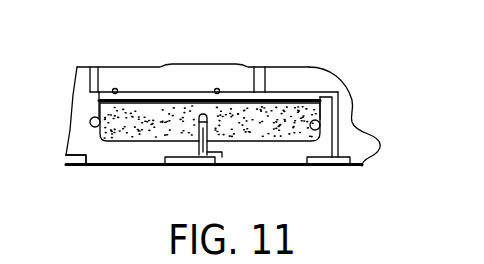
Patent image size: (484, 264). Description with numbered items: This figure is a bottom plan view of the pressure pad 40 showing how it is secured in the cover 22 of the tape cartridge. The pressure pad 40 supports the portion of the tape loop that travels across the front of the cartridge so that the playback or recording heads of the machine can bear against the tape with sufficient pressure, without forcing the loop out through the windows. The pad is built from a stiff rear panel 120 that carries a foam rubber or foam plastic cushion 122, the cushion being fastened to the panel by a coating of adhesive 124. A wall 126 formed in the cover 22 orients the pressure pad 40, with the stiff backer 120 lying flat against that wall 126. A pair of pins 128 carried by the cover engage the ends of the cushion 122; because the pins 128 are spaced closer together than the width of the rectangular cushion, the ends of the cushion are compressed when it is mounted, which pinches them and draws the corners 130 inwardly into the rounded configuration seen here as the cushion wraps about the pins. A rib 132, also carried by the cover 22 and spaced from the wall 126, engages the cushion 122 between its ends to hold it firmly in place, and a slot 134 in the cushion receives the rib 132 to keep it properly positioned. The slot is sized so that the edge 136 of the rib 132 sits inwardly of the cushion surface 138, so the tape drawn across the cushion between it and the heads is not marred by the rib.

The cover 22 is at (331, 68).
The pressure pad 40 is at (108, 66).
The stiff rear panel 120 is at (187, 99).
The cushion 122 is at (281, 132).
The adhesive 124 is at (267, 108).
The wall 126 is at (142, 91).
The pins 128 is at (90, 123).
The corners 130 is at (92, 143).
The rib 132 is at (198, 129).
The slot 134 is at (207, 114).
The edge 136 is at (199, 138).
The cushion surface 138 is at (85, 184).